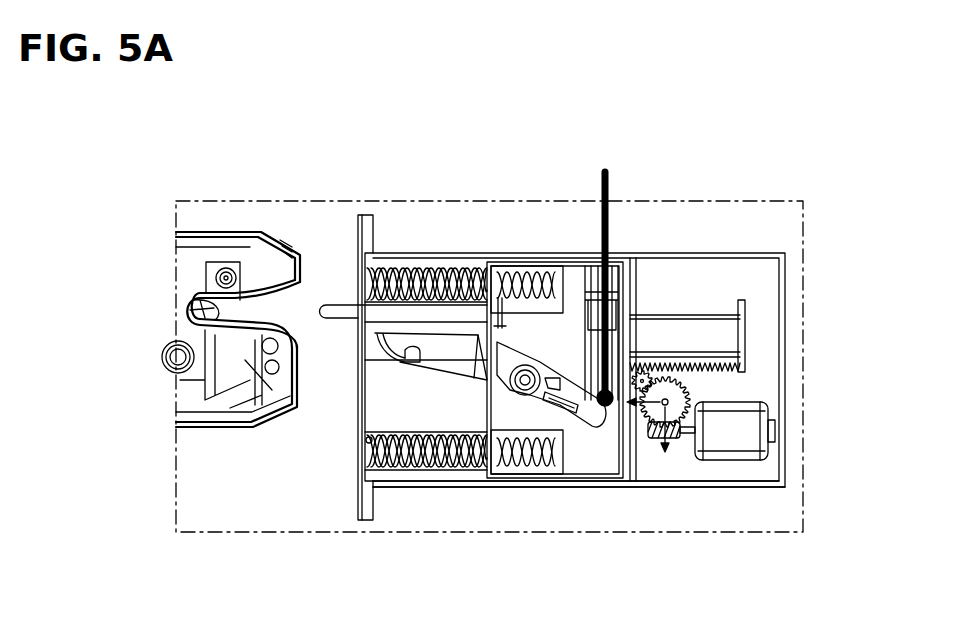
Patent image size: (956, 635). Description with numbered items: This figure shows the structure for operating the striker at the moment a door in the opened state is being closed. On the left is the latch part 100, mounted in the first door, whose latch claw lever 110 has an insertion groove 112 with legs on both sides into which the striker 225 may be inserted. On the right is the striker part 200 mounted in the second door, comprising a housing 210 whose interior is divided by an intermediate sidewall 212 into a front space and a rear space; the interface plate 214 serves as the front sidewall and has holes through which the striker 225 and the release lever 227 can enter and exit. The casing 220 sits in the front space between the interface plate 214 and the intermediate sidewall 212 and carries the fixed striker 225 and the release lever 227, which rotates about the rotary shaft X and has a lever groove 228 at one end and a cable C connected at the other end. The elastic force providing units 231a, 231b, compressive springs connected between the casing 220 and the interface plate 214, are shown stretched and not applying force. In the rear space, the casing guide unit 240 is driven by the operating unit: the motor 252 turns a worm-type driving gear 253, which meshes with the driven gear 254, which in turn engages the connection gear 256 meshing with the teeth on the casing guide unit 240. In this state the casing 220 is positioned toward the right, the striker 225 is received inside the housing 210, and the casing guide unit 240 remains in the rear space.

The latch part 100 is at (206, 450).
The latch claw lever 110 is at (190, 308).
The insertion groove 112 is at (287, 306).
The striker part 200 is at (568, 514).
The housing 210 is at (710, 488).
The intermediate sidewall 212 is at (632, 292).
The interface plate 214 is at (355, 492).
The casing 220 is at (582, 278).
The striker 225 is at (336, 303).
The release lever 227 is at (447, 357).
The lever groove 228 is at (412, 360).
The elastic force providing unit 231a is at (367, 452).
The elastic force providing unit 231b is at (447, 275).
The casing guide unit 240 is at (700, 330).
The motor 252 is at (750, 433).
The driving gear 253 is at (656, 440).
The driven gear 254 is at (672, 393).
The connection gear 256 is at (648, 372).
The rotary shaft X is at (525, 384).
The cable C is at (605, 277).